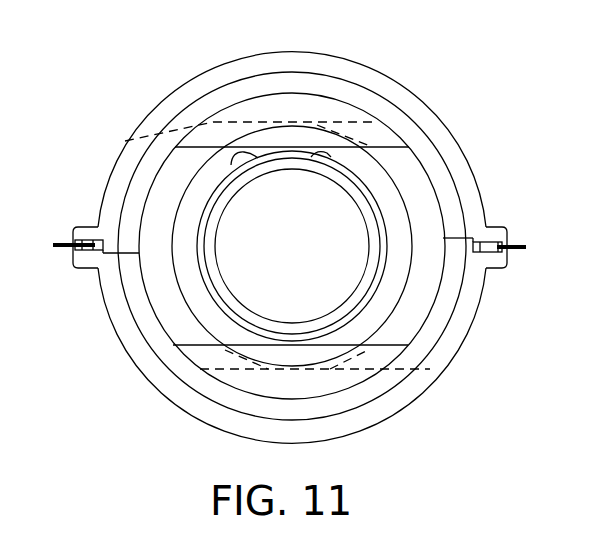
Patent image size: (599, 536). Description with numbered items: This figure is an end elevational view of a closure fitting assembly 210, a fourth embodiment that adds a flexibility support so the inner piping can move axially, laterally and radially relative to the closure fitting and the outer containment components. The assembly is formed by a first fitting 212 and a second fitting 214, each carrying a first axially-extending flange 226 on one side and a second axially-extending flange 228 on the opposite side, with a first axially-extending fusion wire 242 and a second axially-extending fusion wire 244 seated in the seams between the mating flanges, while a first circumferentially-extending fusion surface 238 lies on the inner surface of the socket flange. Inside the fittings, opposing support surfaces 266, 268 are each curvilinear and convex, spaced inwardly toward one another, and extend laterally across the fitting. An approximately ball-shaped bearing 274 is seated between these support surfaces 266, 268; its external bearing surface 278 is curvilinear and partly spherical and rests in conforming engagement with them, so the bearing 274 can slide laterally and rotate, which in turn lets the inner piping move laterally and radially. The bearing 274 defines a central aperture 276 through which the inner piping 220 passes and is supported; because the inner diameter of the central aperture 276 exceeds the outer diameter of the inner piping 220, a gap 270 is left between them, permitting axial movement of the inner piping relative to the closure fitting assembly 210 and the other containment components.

The closure fitting assembly 210 is at (443, 107).
The first fitting 212 is at (380, 420).
The second fitting 214 is at (188, 82).
The inner piping 220 is at (262, 157).
The first axially-extending flange 226 is at (487, 225).
The second axially-extending flange 228 is at (88, 266).
The first circumferentially-extending fusion surface 238 is at (178, 370).
The first axially-extending fusion wire 242 is at (492, 244).
The second axially-extending fusion wire 244 is at (88, 240).
The support surface 266 is at (435, 370).
The support surface 268 is at (134, 134).
The gap 270 is at (276, 149).
The bearing 274 is at (196, 309).
The central aperture 276 is at (318, 150).
The external bearing surface 278 is at (172, 207).